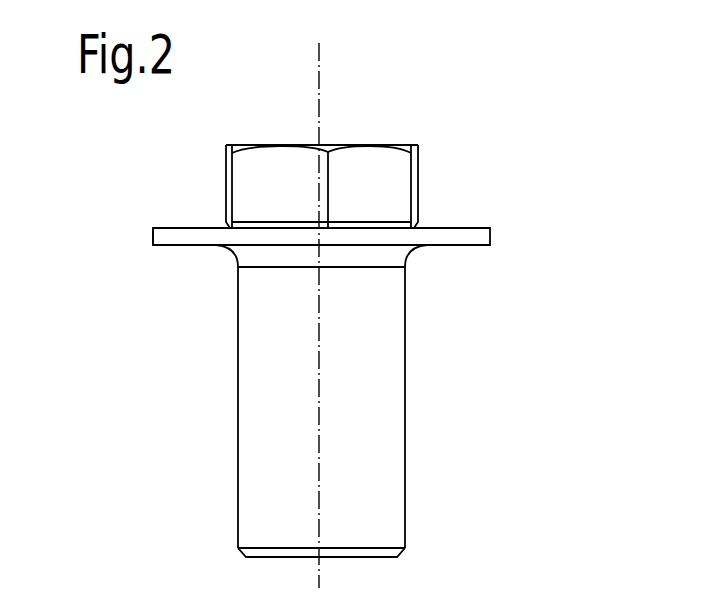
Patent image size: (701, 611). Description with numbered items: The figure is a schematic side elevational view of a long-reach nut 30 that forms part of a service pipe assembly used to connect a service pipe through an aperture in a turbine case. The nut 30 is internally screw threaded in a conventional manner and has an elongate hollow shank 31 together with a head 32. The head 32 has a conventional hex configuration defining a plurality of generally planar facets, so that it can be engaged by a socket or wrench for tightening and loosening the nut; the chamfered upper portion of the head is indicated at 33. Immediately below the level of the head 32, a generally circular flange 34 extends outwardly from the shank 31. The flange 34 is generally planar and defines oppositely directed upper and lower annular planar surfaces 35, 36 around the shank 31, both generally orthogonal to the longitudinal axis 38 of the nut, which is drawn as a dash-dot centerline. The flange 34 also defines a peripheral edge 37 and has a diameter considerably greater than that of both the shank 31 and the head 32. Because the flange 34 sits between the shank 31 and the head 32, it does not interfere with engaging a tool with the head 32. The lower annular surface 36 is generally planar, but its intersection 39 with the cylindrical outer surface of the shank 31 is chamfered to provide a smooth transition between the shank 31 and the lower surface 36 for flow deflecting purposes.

The long-reach nut 30 is at (487, 170).
The shank 31 is at (390, 403).
The head 32 is at (351, 154).
The chamfer of head 33 is at (350, 163).
The flange 34 is at (498, 230).
The upper annular surface 35 is at (185, 227).
The lower annular surface 36 is at (180, 246).
The peripheral edge 37 is at (153, 237).
The longitudinal axis 38 is at (323, 60).
The intersection 39 is at (228, 252).